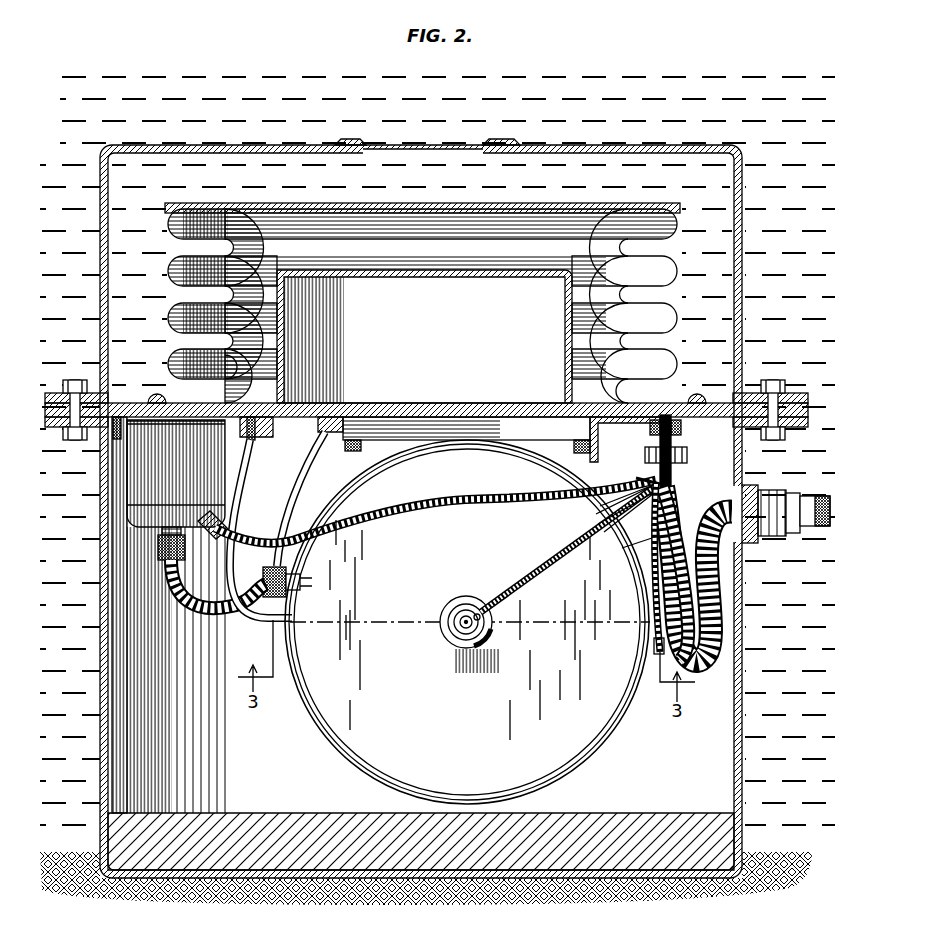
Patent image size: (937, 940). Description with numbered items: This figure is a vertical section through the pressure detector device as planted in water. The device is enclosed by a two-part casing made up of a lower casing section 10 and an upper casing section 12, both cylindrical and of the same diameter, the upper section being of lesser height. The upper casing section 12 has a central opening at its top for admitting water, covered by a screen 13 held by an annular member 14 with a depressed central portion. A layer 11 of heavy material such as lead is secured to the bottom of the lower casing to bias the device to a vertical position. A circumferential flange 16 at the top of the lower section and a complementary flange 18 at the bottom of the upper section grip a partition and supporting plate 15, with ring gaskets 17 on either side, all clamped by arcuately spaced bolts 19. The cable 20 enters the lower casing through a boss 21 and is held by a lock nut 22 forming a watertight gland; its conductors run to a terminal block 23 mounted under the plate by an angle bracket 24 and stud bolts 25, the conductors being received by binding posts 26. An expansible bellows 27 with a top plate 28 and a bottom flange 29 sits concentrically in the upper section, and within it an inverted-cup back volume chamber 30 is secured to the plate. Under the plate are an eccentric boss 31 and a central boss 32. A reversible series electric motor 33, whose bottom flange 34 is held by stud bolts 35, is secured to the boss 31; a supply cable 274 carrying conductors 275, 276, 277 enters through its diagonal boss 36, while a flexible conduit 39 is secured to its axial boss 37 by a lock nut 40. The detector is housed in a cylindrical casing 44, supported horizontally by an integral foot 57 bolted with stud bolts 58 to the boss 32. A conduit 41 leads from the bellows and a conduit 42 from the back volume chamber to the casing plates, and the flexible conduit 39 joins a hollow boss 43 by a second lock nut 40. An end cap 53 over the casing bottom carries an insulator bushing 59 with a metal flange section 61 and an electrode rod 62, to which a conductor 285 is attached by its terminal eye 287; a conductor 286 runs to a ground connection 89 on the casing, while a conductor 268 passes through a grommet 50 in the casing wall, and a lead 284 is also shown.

The lower casing section 10 is at (401, 511).
The layer of high specific gravity material 11 is at (265, 822).
The upper casing section 12 is at (102, 258).
The screen 13 is at (412, 145).
The annular member 14 is at (520, 142).
The partition and supporting plate 15 is at (422, 402).
The circumferential flange 16 is at (52, 428).
The ring gaskets 17 is at (800, 416).
The circumferential flange 18 is at (50, 392).
The bolts 19 is at (74, 378).
The cable 20 is at (805, 495).
The boss 21 is at (750, 484).
The lock nut 22 is at (772, 536).
The terminal block 23 is at (673, 446).
The angle bracket 24 is at (639, 441).
The stud bolts 25 is at (698, 403).
The binding posts 26 is at (689, 458).
The expansible bellows 27 is at (166, 313).
The top plate 28 is at (562, 204).
The bottom flange 29 is at (162, 396).
The back volume chamber 30 is at (450, 298).
The boss 31 is at (270, 420).
The boss 32 is at (605, 422).
The reversible series electric motor 33 is at (138, 482).
The bottom flange 34 is at (170, 427).
The stud bolts 35 is at (112, 441).
The diagonally positioned boss 36 is at (228, 525).
The axial boss 37 is at (162, 535).
The flexible conduit 39 is at (218, 612).
The lock nut 40 is at (160, 553).
The conduit 41 is at (243, 476).
The conduit 42 is at (296, 492).
The hollow boss 43 is at (301, 582).
The cylindrical casing 44 is at (598, 740).
The grommet 50 is at (659, 658).
The end cap 53 is at (324, 692).
The integral foot 57 is at (494, 438).
The stud bolts 58 is at (598, 456).
The insulator bushing 59 is at (455, 613).
The metal flange section 61 is at (460, 638).
The electrode rod 62 is at (492, 628).
The ground connection 89 is at (662, 532).
The conductor 268 is at (655, 596).
The supply cable 274 is at (458, 494).
The conductor 275 is at (636, 478).
The conductor 276 is at (600, 510).
The conductor 277 is at (600, 521).
The lead 284 is at (621, 552).
The conductor 285 is at (584, 530).
The conductor 286 is at (688, 500).
The terminal eye 287 is at (473, 612).